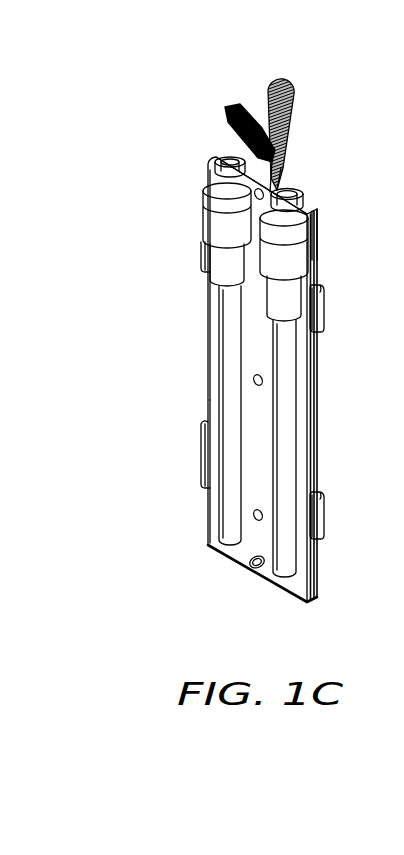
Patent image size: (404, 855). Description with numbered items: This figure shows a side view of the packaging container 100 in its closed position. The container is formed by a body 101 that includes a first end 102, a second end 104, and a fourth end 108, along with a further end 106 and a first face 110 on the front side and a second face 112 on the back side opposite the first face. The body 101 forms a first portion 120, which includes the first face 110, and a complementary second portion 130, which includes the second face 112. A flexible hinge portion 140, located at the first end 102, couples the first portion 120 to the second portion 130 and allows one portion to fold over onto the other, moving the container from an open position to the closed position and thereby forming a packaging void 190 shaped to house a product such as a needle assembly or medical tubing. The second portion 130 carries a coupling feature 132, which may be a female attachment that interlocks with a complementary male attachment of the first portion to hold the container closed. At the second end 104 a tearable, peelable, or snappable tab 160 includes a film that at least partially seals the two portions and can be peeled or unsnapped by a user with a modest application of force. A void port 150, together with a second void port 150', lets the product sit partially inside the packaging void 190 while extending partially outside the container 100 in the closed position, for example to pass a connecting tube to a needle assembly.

The packaging container 100 is at (147, 178).
The body 101 is at (358, 138).
The first end 102 is at (313, 600).
The second end 104 is at (312, 207).
The front face of plate 106 is at (207, 353).
The fourth end 108 is at (315, 398).
The first face 110 is at (207, 397).
The second face 112 is at (317, 360).
The first portion 120 is at (210, 503).
The second portion 130 is at (315, 432).
The coupling feature 132 is at (325, 308).
The hinge portion 140 is at (245, 568).
The void port 150 is at (216, 185).
The second tube holder 150' is at (298, 352).
The tearable, peelable, or snappable tab 160 is at (287, 74).
The packaging void 190 is at (227, 320).